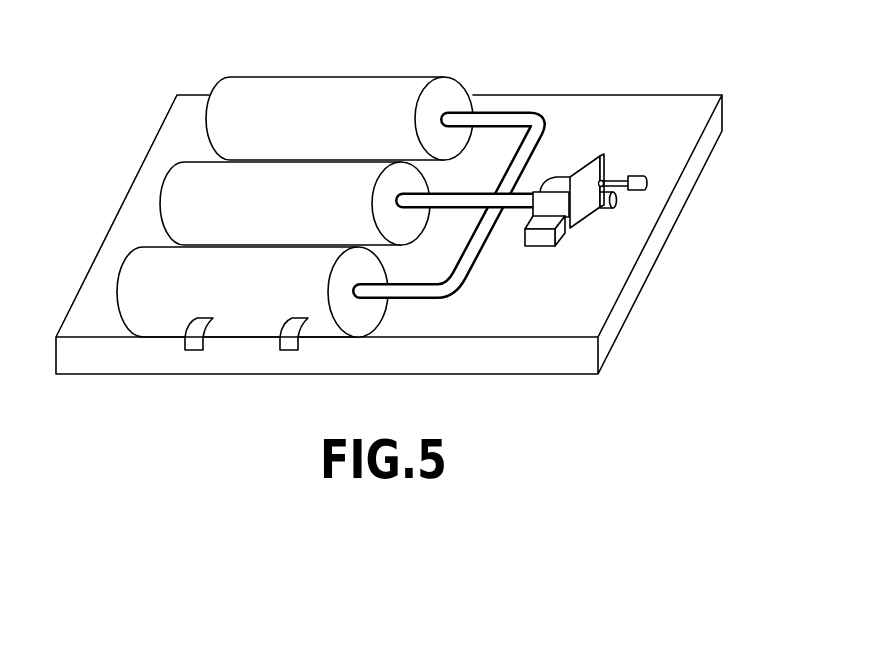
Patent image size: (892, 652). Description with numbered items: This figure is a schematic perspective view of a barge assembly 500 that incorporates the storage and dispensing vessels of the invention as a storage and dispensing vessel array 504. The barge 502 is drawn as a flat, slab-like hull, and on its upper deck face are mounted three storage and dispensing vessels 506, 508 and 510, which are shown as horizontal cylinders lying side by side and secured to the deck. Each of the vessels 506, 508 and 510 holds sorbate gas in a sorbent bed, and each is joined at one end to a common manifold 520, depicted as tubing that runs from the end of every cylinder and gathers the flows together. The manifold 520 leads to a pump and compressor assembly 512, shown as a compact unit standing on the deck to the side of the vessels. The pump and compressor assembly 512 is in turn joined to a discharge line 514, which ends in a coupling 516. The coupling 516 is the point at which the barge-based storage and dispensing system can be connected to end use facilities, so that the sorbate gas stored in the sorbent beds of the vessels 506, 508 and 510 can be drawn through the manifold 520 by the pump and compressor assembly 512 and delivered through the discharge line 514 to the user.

The barge assembly 500 is at (391, 216).
The barge 502 is at (468, 367).
The storage and dispensing vessel array 504 is at (246, 172).
The storage and dispensing vessel 506 is at (238, 83).
The storage and dispensing vessel 508 is at (172, 180).
The storage and dispensing vessel 510 is at (130, 268).
The pump and compressor assembly 512 is at (643, 219).
The discharge line 514 is at (605, 178).
The coupling 516 is at (647, 188).
The manifold 520 is at (551, 126).